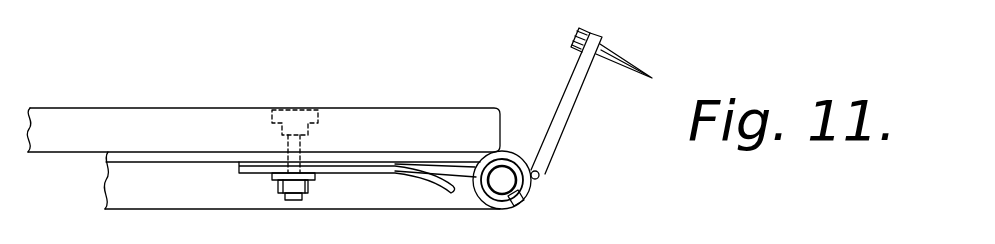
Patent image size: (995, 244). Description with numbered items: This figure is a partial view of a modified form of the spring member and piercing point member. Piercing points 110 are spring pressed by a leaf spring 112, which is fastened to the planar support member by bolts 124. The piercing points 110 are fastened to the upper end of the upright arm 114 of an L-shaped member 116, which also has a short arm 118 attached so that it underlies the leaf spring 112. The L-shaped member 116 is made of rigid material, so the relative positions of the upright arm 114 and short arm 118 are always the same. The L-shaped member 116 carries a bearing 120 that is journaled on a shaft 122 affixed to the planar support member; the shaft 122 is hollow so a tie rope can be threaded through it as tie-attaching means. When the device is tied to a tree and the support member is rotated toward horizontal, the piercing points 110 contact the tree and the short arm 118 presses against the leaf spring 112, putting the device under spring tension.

The piercing points 110 is at (623, 48).
The leaf spring 112 is at (402, 177).
The upright arm 114 is at (571, 112).
The L-shaped member 116 is at (541, 173).
The short arm 118 is at (474, 198).
The bearing 120 is at (527, 198).
The shaft 122 is at (500, 197).
The bolts 124 is at (296, 116).